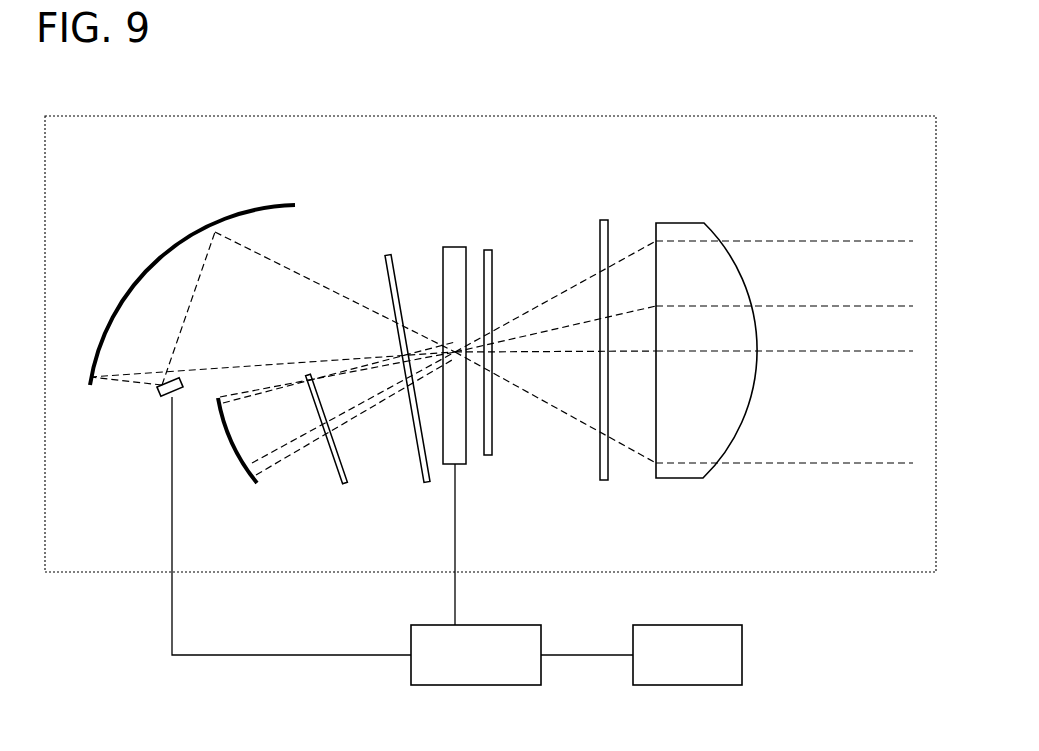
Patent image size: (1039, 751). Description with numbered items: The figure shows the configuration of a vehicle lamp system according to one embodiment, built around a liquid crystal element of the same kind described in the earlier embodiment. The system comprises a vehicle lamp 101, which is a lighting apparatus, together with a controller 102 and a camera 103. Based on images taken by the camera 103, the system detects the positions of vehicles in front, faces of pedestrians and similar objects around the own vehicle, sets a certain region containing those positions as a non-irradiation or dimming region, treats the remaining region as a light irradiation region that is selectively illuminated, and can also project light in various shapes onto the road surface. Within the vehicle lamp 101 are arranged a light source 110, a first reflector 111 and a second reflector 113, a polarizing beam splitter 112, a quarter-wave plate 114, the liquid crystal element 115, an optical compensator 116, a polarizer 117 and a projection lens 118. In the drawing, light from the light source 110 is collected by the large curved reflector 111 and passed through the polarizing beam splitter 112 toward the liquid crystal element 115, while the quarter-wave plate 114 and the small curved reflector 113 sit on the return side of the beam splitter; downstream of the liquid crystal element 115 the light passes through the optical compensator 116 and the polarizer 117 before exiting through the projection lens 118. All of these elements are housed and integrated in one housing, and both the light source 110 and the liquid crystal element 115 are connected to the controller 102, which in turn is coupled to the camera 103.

The vehicle lamp 101 is at (891, 572).
The controller 102 is at (500, 625).
The camera 103 is at (705, 625).
The light source 110 is at (153, 393).
The reflector 111 is at (260, 207).
The polarizing beam splitter 112 is at (388, 255).
The reflector 113 is at (255, 483).
The quarter-wave plate 114 is at (345, 485).
The liquid crystal element 115 is at (452, 247).
The optical compensator 116 is at (488, 250).
The polarizer 117 is at (604, 220).
The projection lens 118 is at (677, 222).